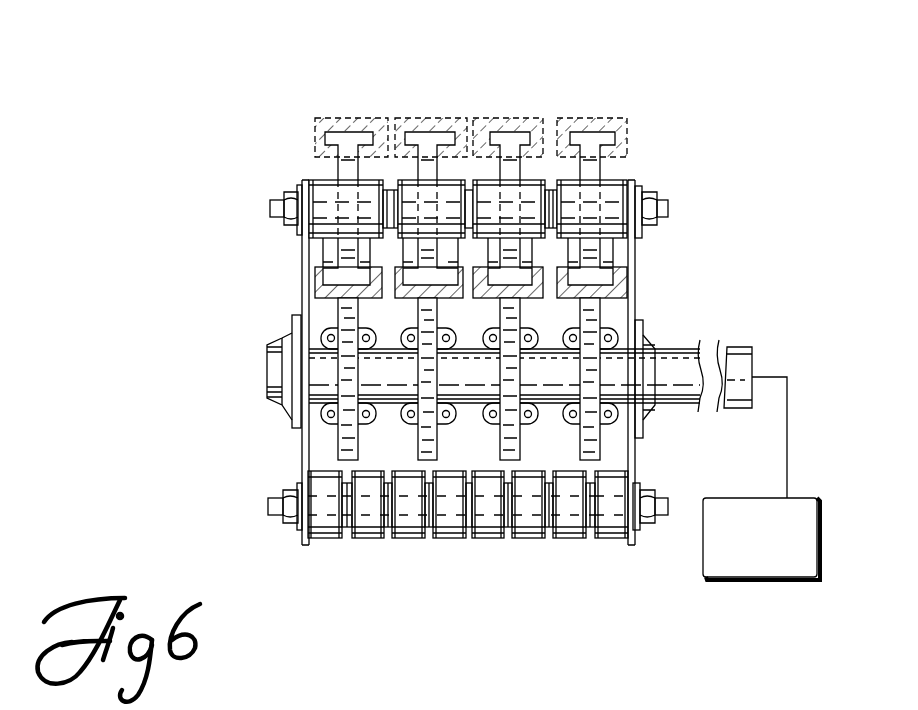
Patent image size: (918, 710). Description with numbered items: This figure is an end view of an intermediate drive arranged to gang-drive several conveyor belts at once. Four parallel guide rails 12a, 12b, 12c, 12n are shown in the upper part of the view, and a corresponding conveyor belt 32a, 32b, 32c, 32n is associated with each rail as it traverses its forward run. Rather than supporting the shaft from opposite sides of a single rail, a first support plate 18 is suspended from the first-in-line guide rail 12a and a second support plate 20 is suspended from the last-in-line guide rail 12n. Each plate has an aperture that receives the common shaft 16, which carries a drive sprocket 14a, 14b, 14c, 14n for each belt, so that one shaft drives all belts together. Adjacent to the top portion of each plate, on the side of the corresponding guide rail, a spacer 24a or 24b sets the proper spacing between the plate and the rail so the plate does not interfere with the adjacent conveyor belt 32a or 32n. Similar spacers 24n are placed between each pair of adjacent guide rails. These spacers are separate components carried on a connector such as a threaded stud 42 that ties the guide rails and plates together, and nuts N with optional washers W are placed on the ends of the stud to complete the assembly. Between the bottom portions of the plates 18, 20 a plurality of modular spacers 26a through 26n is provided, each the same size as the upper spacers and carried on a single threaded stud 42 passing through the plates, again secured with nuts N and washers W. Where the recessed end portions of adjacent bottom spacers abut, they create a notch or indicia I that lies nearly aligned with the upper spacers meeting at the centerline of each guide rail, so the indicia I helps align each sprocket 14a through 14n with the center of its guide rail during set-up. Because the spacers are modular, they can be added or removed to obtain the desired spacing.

The first guide rail 12a is at (343, 160).
The guide rail 12b is at (430, 208).
The guide rail 12c is at (510, 208).
The last-in-line guide rail 12n is at (596, 178).
The drive sprocket 14a is at (343, 310).
The drive sprocket 14b is at (428, 379).
The drive sprocket 14c is at (510, 379).
The drive sprocket 14n is at (637, 288).
The shaft 16 is at (748, 360).
The first support plate 18 is at (305, 541).
The second support plate 20 is at (632, 545).
The spacer 24a is at (325, 222).
The spacer 24b is at (617, 203).
The spacer 24n is at (468, 190).
The modular spacer 26a is at (320, 539).
The modular spacer 26n is at (608, 539).
The conveyor belt 32a is at (341, 118).
The conveyor belt 32b is at (432, 118).
The conveyor belt 32c is at (508, 208).
The conveyor belt 32n is at (592, 118).
The threaded stud 42 is at (270, 208).
The nut N is at (286, 194).
The washer W is at (300, 183).
The indicia I is at (346, 539).